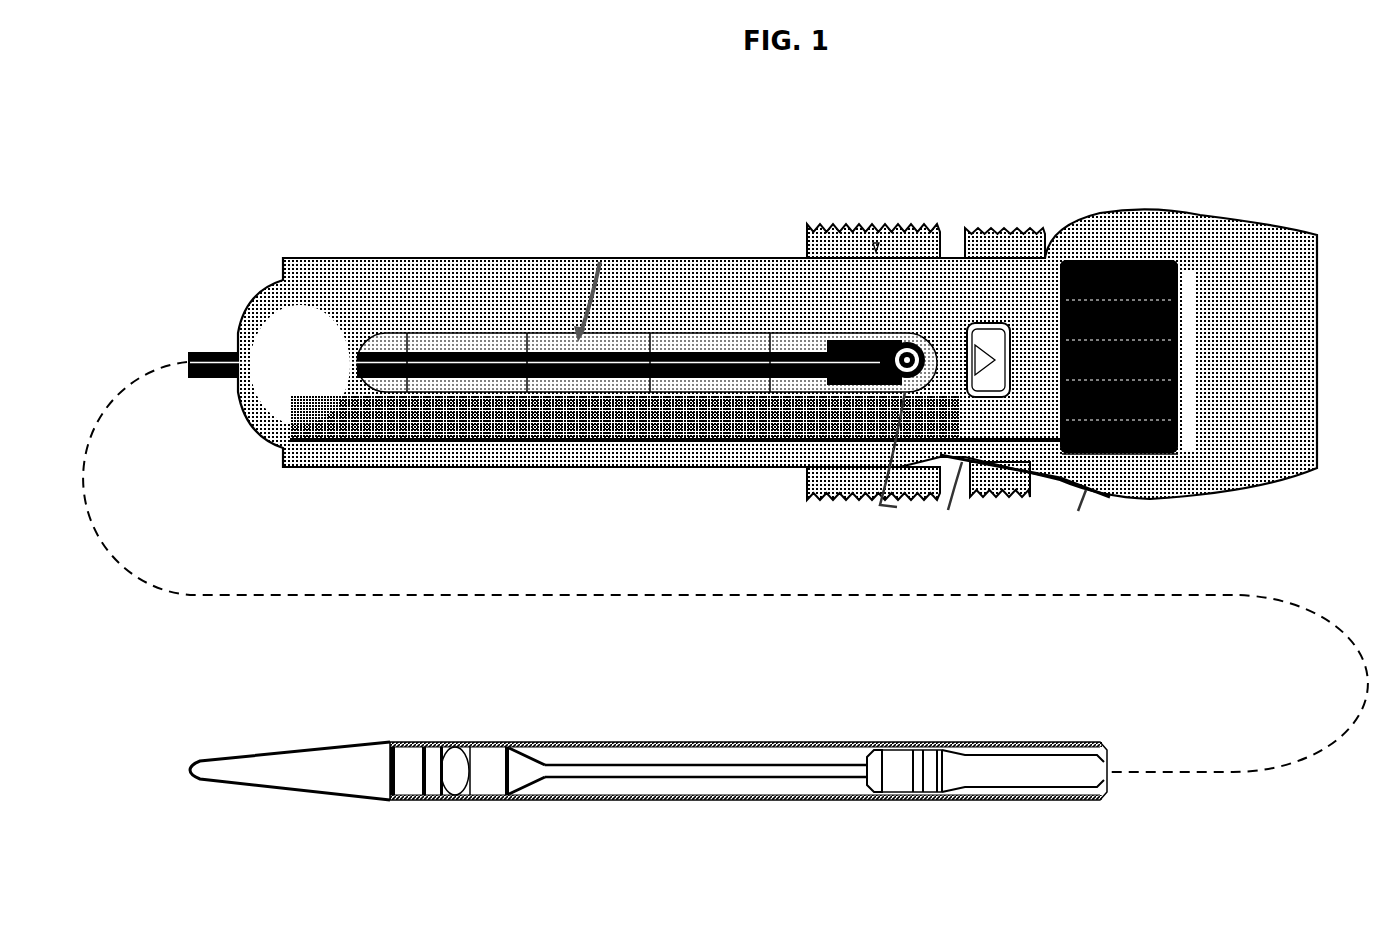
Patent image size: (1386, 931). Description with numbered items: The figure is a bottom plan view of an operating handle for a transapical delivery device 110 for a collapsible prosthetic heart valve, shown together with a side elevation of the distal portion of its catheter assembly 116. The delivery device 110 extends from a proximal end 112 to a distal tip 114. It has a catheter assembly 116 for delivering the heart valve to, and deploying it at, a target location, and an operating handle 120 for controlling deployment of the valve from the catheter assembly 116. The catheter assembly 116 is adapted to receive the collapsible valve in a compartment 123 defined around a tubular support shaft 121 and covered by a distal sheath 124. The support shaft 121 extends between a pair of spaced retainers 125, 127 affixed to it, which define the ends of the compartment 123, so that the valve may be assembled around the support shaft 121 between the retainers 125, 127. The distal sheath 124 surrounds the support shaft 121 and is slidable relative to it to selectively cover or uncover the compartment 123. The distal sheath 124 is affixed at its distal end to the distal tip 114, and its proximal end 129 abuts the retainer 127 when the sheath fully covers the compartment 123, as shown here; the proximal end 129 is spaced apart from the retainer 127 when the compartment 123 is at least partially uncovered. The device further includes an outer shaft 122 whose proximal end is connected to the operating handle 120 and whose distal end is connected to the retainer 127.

The transapical delivery device 110 is at (420, 222).
The proximal end 112 is at (1288, 480).
The distal tip 114 is at (192, 768).
The catheter assembly 116 is at (683, 712).
The operating handle 120 is at (1231, 197).
The tubular support shaft 121 is at (830, 765).
The outer shaft 122 is at (1058, 742).
The compartment 123 is at (699, 792).
The distal sheath 124 is at (571, 742).
The retainer 125 is at (480, 800).
The retainer 127 is at (870, 790).
The proximal end of distal sheath 129 is at (925, 800).